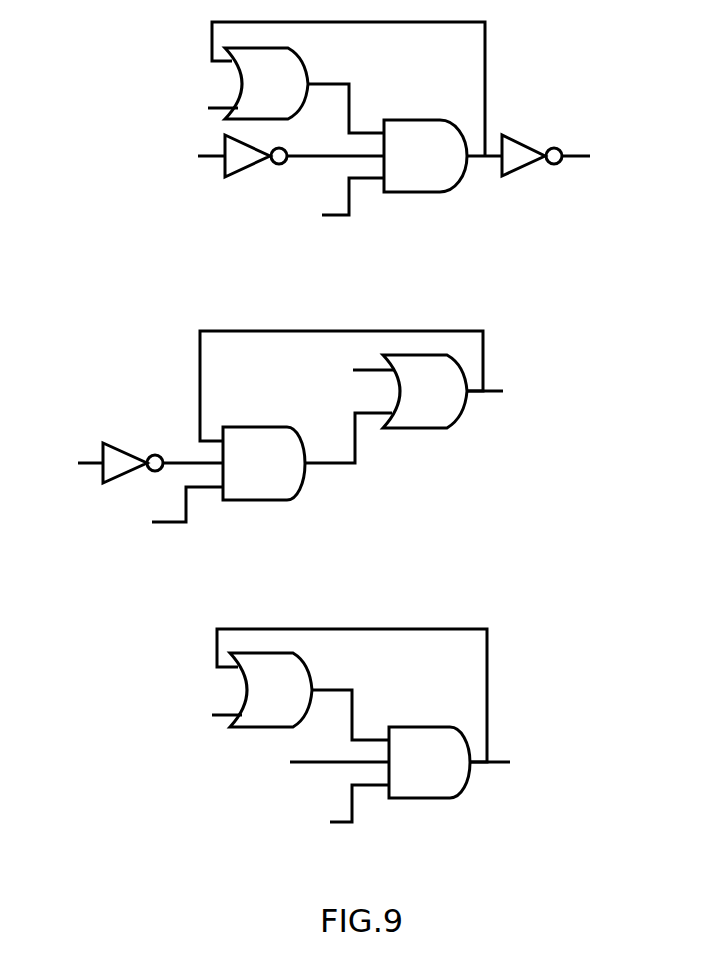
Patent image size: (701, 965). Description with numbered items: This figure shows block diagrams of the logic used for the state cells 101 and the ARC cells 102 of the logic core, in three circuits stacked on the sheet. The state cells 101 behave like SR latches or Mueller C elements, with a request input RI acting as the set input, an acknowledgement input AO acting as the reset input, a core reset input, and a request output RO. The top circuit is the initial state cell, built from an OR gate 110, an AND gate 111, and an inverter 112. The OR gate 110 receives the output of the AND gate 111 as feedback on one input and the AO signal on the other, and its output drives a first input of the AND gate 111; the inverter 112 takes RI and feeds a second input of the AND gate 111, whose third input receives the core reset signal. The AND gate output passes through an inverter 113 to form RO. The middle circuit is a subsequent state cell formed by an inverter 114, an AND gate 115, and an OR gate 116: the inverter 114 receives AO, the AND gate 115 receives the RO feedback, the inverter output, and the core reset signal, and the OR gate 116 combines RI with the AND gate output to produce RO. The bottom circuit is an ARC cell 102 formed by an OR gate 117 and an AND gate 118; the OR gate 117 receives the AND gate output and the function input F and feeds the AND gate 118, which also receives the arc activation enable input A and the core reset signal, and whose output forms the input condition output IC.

The state cell 101 is at (76, 48).
The ARC cell 102 is at (60, 642).
The OR gate 110 is at (296, 97).
The AND gate 111 is at (445, 168).
The inverter 112 is at (250, 143).
The inverter 113 is at (545, 109).
The inverter 114 is at (136, 443).
The AND gate 115 is at (283, 475).
The OR gate 116 is at (453, 403).
The OR gate 117 is at (298, 702).
The AND gate 118 is at (450, 774).